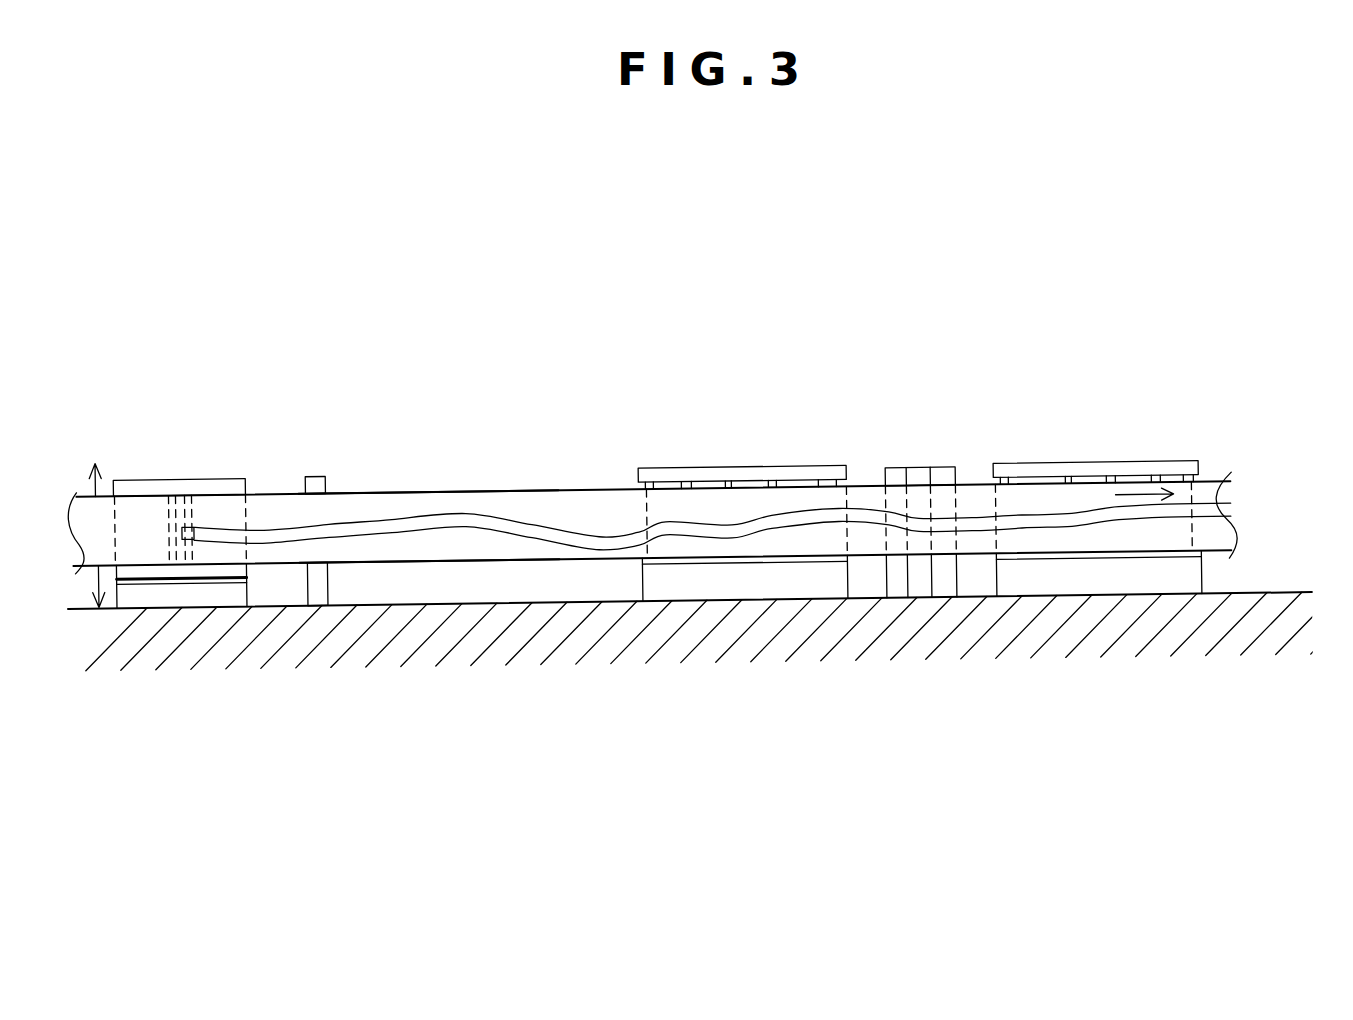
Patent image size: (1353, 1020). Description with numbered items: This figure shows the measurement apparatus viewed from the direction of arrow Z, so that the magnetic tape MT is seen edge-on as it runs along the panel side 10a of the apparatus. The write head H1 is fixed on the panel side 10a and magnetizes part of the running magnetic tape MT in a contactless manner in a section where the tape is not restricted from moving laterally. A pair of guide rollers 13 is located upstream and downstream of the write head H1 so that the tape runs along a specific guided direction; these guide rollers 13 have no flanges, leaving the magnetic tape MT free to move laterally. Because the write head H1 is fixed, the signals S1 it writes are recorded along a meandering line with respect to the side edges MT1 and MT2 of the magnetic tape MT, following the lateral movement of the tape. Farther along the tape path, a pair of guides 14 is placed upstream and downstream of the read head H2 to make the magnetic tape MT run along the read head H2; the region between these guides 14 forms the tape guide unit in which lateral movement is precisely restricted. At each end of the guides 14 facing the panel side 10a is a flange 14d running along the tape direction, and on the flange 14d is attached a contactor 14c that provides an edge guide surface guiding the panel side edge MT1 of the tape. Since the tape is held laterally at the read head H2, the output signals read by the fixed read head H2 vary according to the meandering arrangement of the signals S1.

The panel side 10a is at (1263, 624).
The magnetic tape MT is at (353, 505).
The panel side edge MT1 is at (353, 569).
The side edge MT2 is at (428, 498).
The signals S1 is at (274, 544).
The write head H1 is at (160, 482).
The read head H2 is at (918, 479).
The guide rollers 13 is at (317, 482).
The guides 14 is at (722, 477).
The contactor 14c is at (681, 571).
The flange 14d is at (662, 590).